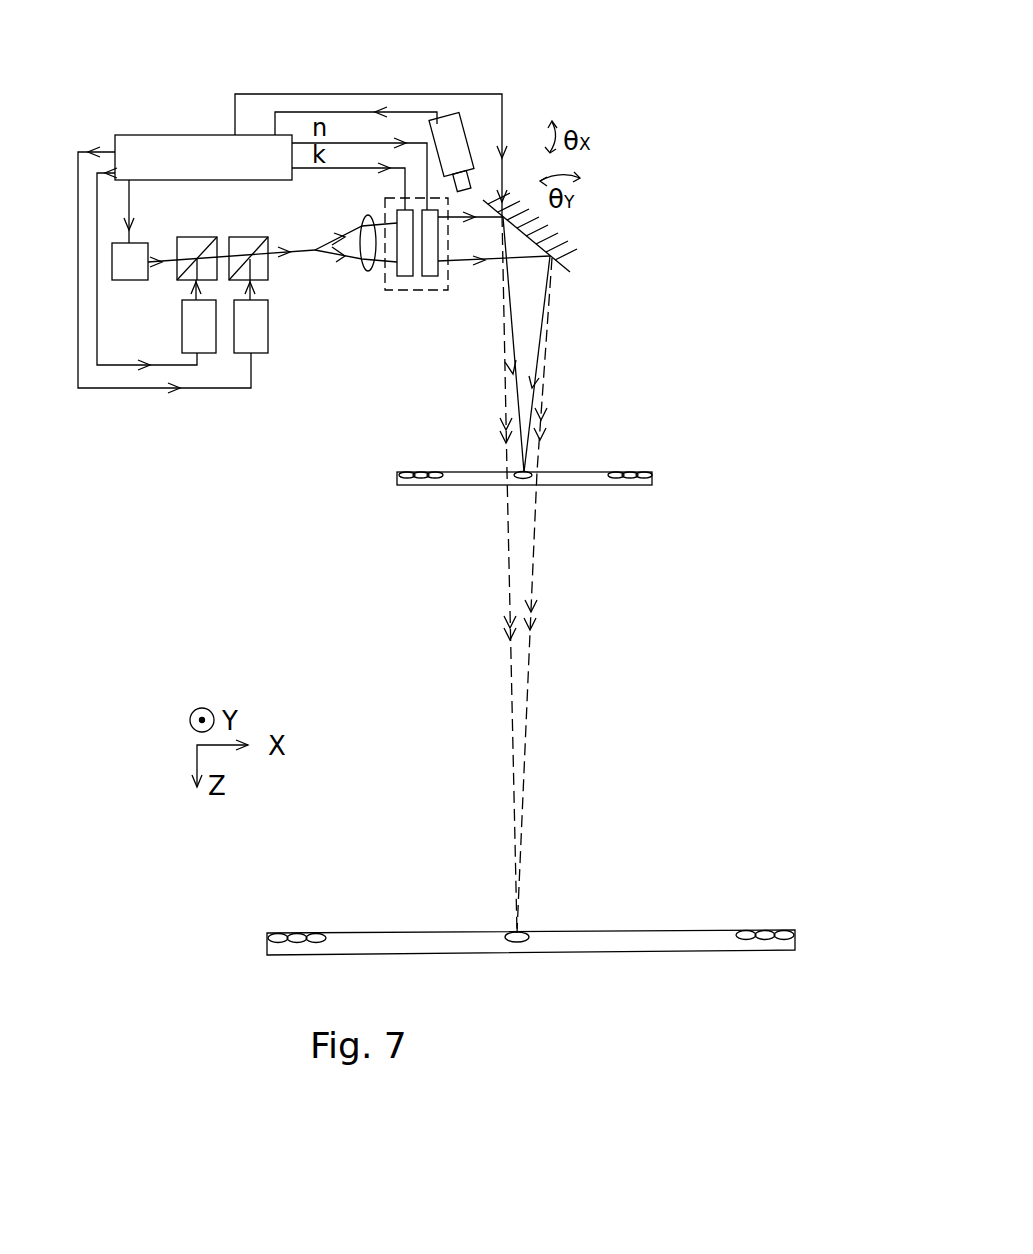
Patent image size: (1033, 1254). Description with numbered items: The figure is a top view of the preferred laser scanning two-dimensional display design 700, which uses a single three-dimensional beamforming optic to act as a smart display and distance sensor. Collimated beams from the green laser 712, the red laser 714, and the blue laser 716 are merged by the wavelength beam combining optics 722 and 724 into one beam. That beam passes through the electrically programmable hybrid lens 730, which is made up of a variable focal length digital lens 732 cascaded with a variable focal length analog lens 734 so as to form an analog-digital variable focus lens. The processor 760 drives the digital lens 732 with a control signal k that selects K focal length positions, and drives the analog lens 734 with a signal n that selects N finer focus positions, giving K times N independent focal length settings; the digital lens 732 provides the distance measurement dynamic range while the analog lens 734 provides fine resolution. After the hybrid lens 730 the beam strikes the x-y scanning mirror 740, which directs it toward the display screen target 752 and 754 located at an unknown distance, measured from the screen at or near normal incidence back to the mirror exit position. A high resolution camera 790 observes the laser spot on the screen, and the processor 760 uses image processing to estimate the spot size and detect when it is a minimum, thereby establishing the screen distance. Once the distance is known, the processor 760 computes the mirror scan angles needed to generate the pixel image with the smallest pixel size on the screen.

The laser scanning 2-D display design 700 is at (157, 76).
The processor 760 is at (158, 135).
The green laser 712 is at (112, 250).
The red laser 714 is at (182, 338).
The blue laser 716 is at (258, 347).
The wavelength beam combining optic 722 is at (185, 233).
The wavelength beam combining optic 724 is at (238, 233).
The programmable hybrid lens 730 is at (447, 263).
The digital lens 732 is at (402, 265).
The analog lens 734 is at (435, 242).
The 2-D scanning mirror 740 is at (575, 265).
The camera 790 is at (455, 128).
The display screen target 752 is at (607, 482).
The display screen target 754 is at (790, 942).